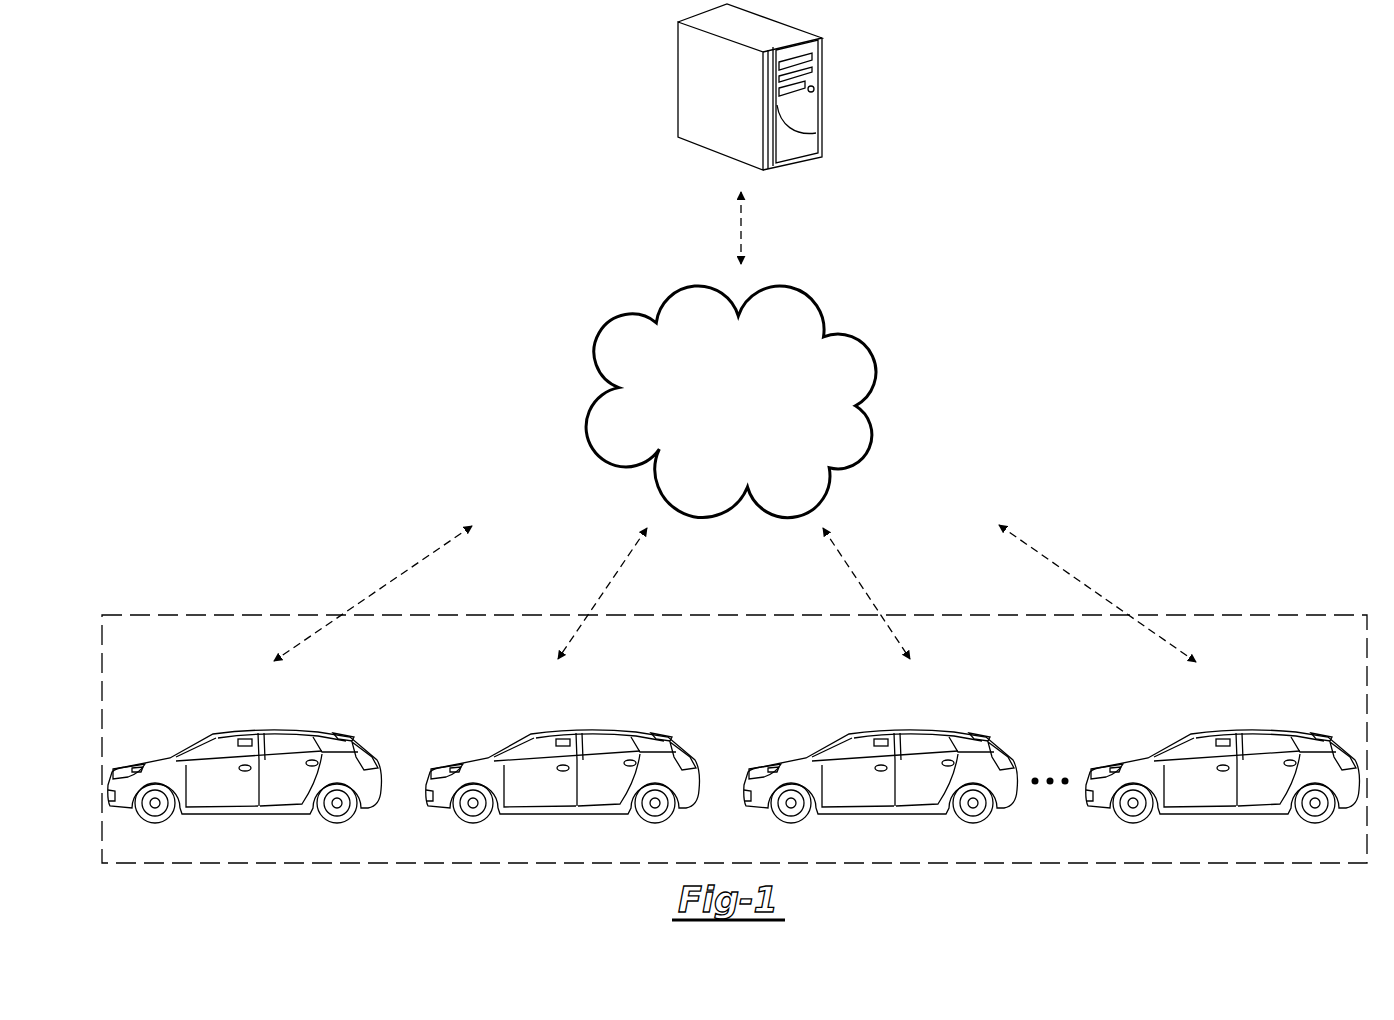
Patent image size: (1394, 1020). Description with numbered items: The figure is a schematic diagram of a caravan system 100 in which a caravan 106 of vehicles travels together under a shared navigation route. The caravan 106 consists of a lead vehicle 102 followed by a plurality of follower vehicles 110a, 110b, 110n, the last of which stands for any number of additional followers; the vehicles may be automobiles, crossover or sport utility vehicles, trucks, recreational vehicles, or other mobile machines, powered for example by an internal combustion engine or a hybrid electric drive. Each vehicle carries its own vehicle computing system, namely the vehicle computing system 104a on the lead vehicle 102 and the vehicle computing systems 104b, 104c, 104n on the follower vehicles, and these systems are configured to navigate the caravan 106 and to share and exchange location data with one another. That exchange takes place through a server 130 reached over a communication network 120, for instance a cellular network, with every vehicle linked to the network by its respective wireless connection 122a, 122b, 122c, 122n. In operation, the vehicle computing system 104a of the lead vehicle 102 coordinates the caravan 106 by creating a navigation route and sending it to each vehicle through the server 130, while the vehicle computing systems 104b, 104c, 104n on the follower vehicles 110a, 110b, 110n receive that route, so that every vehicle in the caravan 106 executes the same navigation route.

The caravan system 100 is at (1152, 145).
The lead vehicle 102 is at (205, 745).
The vehicle computing system 104a is at (245, 738).
The vehicle computing system 104b is at (563, 738).
The vehicle computing system 104c is at (881, 738).
The vehicle computing system 104n is at (1223, 738).
The caravan 106 is at (135, 614).
The follower vehicle 110a is at (523, 745).
The follower vehicle 110b is at (841, 745).
The follower vehicle 110n is at (1183, 745).
The communication network 120 is at (748, 446).
The wireless connection 122a is at (393, 578).
The wireless connection 122b is at (612, 577).
The wireless connection 122c is at (857, 578).
The wireless connection 122n is at (1075, 578).
The server 130 is at (678, 87).